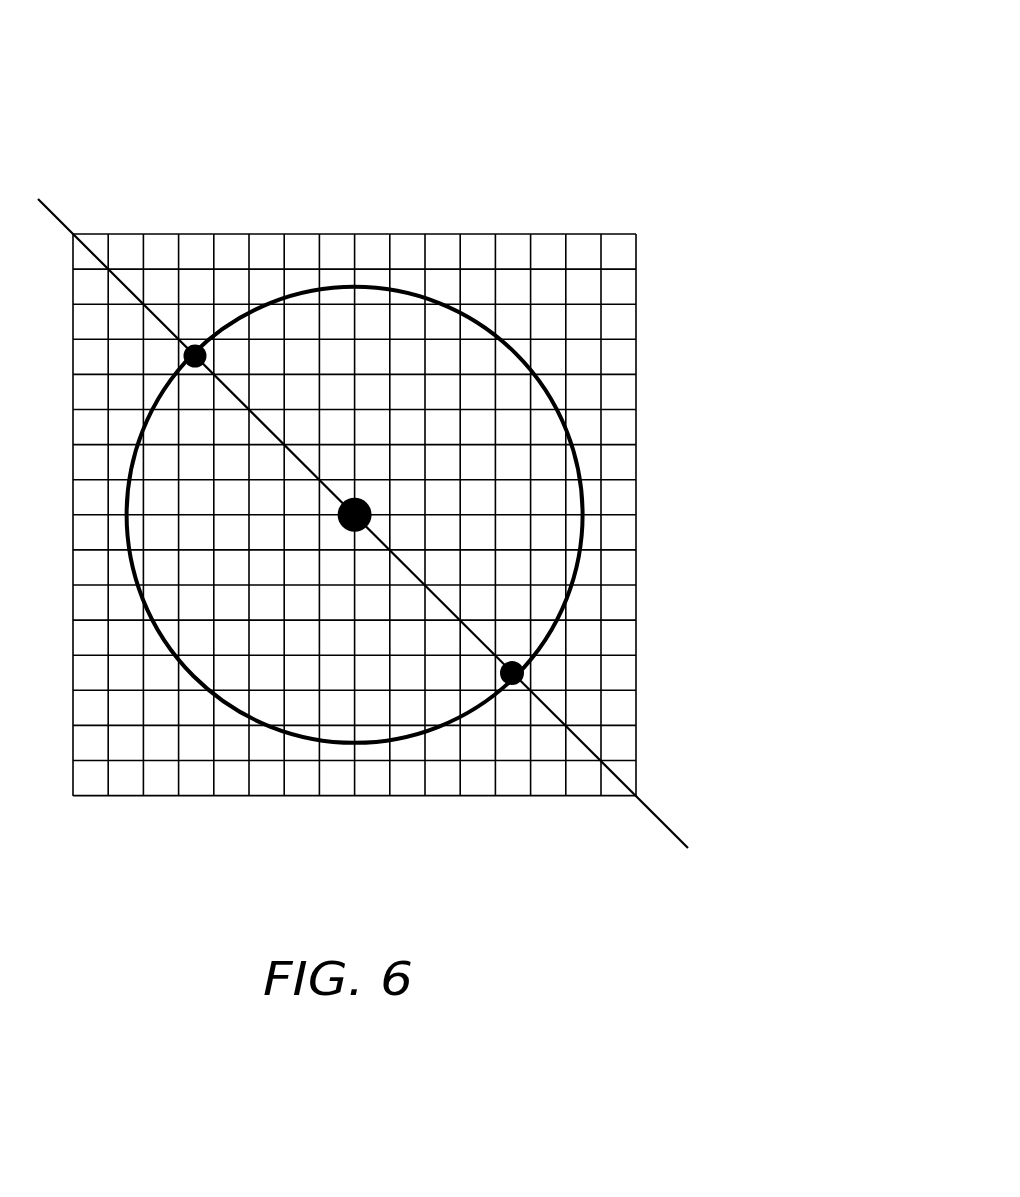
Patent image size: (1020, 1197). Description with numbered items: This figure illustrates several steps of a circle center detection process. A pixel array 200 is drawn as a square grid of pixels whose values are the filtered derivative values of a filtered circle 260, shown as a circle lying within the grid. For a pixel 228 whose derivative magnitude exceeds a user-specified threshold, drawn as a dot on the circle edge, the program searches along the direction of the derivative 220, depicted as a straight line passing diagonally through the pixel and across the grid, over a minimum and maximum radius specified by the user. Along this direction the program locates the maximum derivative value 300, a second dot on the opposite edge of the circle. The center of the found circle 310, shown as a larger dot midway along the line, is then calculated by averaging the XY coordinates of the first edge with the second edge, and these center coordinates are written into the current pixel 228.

The pixel array 200 is at (500, 233).
The direction of the derivative 220 is at (662, 818).
The pixel 228 is at (199, 345).
The filtered circle 260 is at (570, 433).
The maximum derivative value 300 is at (524, 672).
The center of the found circle 310 is at (370, 507).